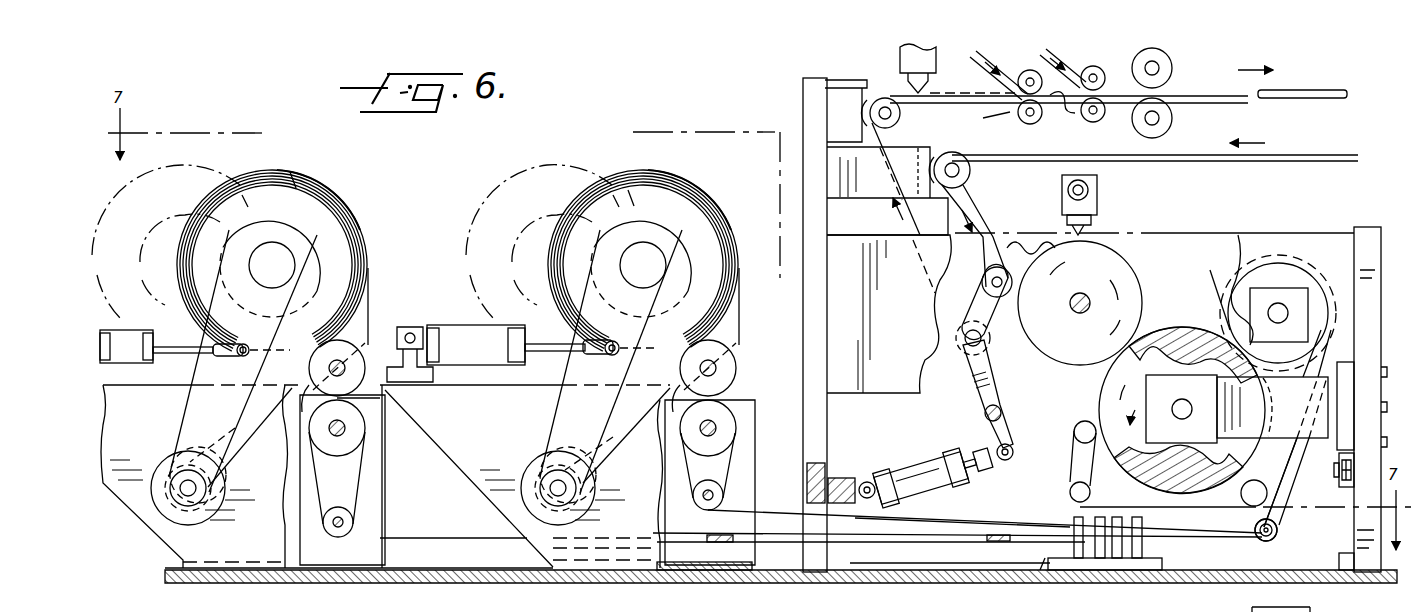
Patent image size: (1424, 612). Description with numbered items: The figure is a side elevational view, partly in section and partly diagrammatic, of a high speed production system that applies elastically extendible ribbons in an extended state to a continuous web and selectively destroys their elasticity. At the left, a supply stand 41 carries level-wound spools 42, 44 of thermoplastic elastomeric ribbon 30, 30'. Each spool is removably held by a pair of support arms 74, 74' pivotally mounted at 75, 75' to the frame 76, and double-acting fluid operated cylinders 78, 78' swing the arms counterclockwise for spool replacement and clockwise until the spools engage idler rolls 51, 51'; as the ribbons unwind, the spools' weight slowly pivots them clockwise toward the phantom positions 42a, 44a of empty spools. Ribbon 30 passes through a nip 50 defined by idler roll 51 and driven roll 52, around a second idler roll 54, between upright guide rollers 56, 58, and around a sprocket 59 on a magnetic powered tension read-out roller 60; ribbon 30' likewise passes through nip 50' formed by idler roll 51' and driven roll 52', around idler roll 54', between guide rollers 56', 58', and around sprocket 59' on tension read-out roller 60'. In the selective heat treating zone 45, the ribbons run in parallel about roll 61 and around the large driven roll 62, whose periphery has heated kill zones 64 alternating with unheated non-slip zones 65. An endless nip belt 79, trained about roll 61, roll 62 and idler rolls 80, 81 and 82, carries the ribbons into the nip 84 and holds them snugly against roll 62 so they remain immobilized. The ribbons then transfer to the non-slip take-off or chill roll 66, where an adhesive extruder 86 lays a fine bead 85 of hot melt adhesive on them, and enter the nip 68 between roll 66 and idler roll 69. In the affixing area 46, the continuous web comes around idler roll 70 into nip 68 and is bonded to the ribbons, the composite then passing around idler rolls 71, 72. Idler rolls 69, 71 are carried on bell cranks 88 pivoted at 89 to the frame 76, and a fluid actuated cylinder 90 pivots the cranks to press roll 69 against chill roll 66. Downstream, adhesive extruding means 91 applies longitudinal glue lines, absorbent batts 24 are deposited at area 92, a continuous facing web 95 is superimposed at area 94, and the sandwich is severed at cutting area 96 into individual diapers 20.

The disposable diaper 20 is at (1342, 88).
The absorbent batt 24 is at (987, 75).
The TUFTANE ribbon 30 is at (841, 538).
The TUFTANE ribbon 30' is at (962, 512).
The supply stand 41 is at (425, 185).
The level-wound spool 42 is at (298, 188).
The phantom line representation of empty spool 42a is at (364, 230).
The level-wound spool 44 is at (634, 190).
The phantom line representation of empty spool 44a is at (700, 228).
The selective heat treating zone 45 is at (1190, 253).
The affixing area 46 is at (1006, 220).
The nip 50 is at (370, 425).
The nip 50' is at (726, 415).
The idler roll 51 is at (354, 357).
The idler roll 51' is at (726, 357).
The driven roll 52 is at (342, 475).
The driven roll 52' is at (706, 477).
The second idler roll 54 is at (321, 528).
The second idler roll 54' is at (691, 507).
The upright guide roller 56 is at (1082, 543).
The upright guide roller 56' is at (1143, 535).
The upright guide roller 58 is at (1043, 581).
The upright guide roller 58' is at (1229, 579).
The pulley or sprocket 59 is at (1296, 530).
The second sprocket 59' is at (1266, 530).
The magnetic powered tension read-out roller 60 is at (1297, 447).
The tension read-out roller 60' is at (1280, 482).
The roll 61 is at (1296, 275).
The driven roll 62 is at (1128, 329).
The heated zone 64 is at (1090, 398).
The non-heated zone 65 is at (1138, 295).
The take-off roll or chill roll 66 is at (1125, 270).
The nip 68 is at (1018, 247).
The idler roll 69 is at (988, 270).
The idler roll 70 is at (974, 161).
The idler roll 71 is at (935, 350).
The idler roll 72 is at (895, 120).
The support arm 74 is at (225, 361).
The support arm 74' is at (591, 361).
The pivot point 75 is at (209, 486).
The pivot point 75' is at (537, 483).
The frame 76 is at (162, 548).
The double-acting fluid operated cylinder 78 is at (195, 324).
The double-acting fluid operated cylinder 78' is at (521, 334).
The endless nip belt 79 is at (1065, 478).
The idler roll 80 is at (1075, 432).
The idler roll 81 is at (1068, 500).
The idler roll 82 is at (1267, 492).
The nip 84 is at (1190, 290).
The bead of hot melt adhesive 85 is at (1077, 230).
The adhesive extruder 86 is at (1098, 190).
The bell crank 88 is at (975, 389).
The pivot point 89 is at (986, 423).
The fluid actuated double-acting cylinder 90 is at (908, 462).
The adhesive extruding means 91 is at (900, 62).
The batt depositing area 92 is at (1069, 98).
The facing sheet applying area 94 is at (1071, 113).
The continuous web of facing sheets 95 is at (1083, 67).
The cutting area 96 is at (1178, 74).